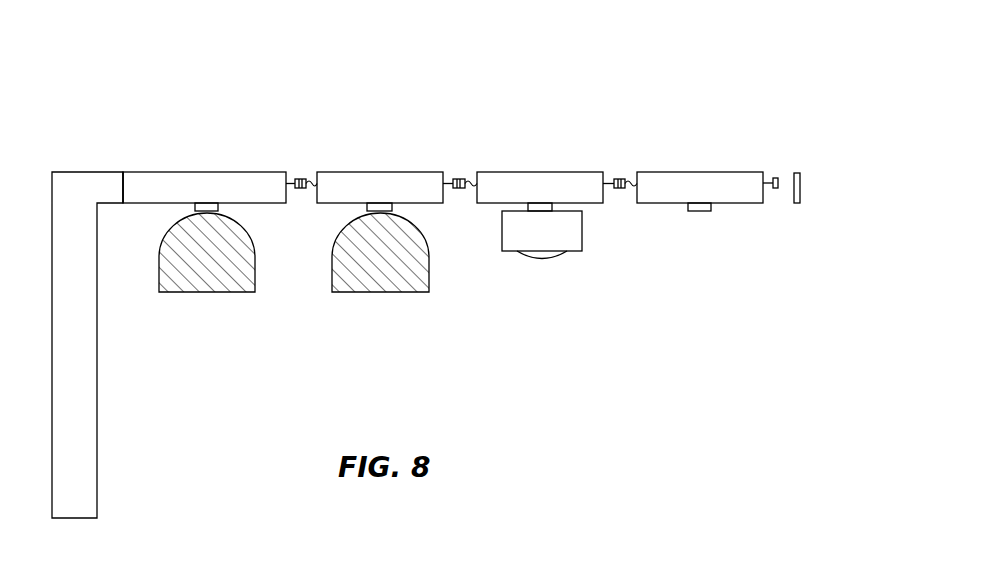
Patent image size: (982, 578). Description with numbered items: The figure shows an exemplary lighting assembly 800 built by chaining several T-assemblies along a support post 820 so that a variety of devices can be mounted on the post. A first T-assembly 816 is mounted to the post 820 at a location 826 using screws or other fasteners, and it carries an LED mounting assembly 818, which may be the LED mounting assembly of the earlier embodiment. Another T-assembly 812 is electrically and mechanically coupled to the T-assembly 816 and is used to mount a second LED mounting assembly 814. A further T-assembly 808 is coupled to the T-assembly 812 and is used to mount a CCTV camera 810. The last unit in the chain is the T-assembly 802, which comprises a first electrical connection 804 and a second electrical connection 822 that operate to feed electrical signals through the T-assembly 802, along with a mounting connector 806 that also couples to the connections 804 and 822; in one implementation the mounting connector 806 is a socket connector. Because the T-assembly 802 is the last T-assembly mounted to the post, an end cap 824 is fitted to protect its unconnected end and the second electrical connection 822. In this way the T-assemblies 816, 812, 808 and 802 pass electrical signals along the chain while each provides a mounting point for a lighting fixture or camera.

The lighting assembly 800 is at (678, 77).
The T-assembly 802 is at (697, 182).
The first electrical connection 804 is at (622, 177).
The mounting connector 806 is at (700, 208).
The T-assembly 808 is at (542, 180).
The CCTV camera 810 is at (543, 254).
The T-assembly 812 is at (381, 180).
The LED mounting assembly 814 is at (393, 282).
The T-assembly 816 is at (199, 180).
The LED mounting assembly 818 is at (222, 282).
The support post 820 is at (82, 375).
The second electrical connection 822 is at (778, 190).
The end cap 824 is at (800, 180).
The mounting location 826 is at (124, 168).